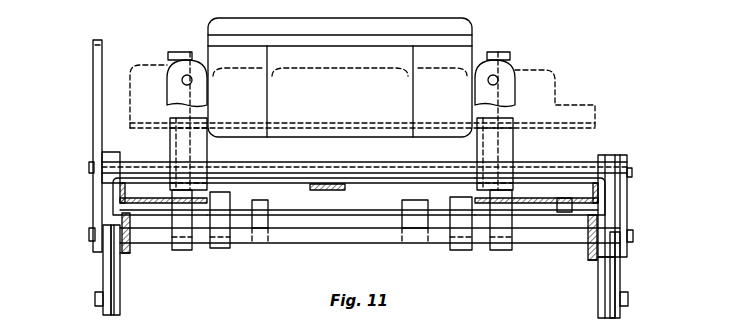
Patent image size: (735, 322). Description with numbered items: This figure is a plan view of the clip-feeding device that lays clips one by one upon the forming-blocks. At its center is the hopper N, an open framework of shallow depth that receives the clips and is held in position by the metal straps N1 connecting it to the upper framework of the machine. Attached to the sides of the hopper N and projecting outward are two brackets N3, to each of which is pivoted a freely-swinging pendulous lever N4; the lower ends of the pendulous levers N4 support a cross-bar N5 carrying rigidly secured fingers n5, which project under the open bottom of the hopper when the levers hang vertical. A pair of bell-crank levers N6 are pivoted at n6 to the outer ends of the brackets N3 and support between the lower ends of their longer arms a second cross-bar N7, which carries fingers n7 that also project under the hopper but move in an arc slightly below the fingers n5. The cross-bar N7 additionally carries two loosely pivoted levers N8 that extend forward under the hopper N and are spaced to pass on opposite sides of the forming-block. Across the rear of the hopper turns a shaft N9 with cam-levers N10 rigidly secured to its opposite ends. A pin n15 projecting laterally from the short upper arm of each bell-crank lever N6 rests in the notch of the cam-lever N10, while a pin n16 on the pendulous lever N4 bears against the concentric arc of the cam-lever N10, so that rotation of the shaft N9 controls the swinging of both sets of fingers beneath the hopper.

The hopper N is at (565, 192).
The metal straps N1 is at (200, 85).
The brackets N3 is at (119, 277).
The pendulous lever N4 is at (132, 240).
The cross-bar N5 is at (370, 226).
The bell-crank levers N6 is at (104, 273).
The cross-bar N7 is at (319, 240).
The levers N8 is at (176, 57).
The shaft N9 is at (440, 172).
The cam-levers N10 is at (95, 78).
The fingers n5 is at (268, 207).
The pivots n6 is at (96, 302).
The fingers n7 is at (224, 212).
The pin n15 is at (89, 234).
The pin n16 is at (122, 256).